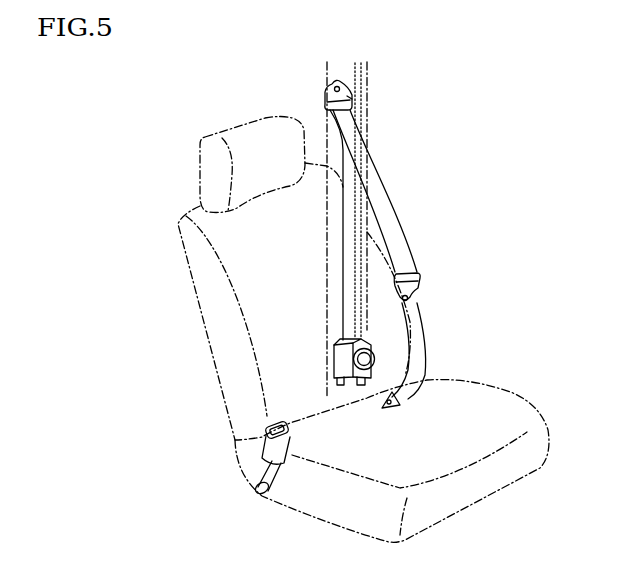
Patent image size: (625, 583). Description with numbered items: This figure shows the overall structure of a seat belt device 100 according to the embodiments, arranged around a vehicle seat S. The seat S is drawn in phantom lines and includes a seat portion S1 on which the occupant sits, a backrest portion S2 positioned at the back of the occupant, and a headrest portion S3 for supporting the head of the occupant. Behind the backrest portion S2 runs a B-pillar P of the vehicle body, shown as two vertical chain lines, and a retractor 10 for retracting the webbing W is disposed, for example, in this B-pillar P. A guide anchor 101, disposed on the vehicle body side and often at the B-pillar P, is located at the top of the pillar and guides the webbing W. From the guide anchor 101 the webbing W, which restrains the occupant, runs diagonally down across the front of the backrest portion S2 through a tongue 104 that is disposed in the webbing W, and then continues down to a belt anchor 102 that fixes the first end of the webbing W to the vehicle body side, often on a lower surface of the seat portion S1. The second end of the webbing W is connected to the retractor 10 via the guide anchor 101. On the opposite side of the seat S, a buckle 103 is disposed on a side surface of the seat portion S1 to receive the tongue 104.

The retractor 10 is at (341, 358).
The seat belt device 100 is at (341, 279).
The guide anchor 101 is at (326, 91).
The belt anchor 102 is at (391, 410).
The buckle 103 is at (248, 440).
The tongue 104 is at (419, 279).
The webbing W is at (386, 193).
The B-pillar P is at (363, 80).
The seat S is at (330, 330).
The seat portion S1 is at (392, 461).
The backrest portion S2 is at (294, 301).
The headrest portion S3 is at (252, 165).